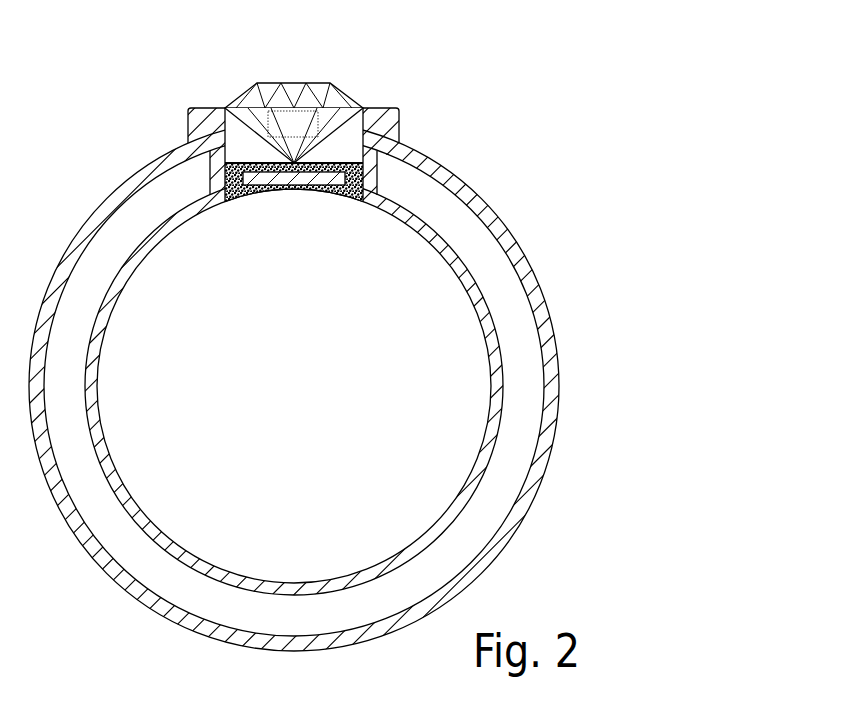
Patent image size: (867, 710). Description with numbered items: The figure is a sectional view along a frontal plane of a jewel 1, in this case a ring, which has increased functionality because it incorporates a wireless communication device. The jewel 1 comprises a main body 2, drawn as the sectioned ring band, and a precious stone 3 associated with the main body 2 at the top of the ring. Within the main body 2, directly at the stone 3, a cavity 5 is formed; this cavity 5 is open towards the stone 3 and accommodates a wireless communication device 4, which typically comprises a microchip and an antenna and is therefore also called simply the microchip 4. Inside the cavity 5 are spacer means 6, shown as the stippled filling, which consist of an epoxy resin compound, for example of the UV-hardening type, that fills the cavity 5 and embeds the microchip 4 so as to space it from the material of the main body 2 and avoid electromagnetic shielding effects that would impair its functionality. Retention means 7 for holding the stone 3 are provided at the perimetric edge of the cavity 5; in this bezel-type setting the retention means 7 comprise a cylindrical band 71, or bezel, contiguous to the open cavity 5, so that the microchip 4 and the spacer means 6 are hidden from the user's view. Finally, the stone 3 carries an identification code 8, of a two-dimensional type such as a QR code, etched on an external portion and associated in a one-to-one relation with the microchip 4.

The jewel 1 is at (632, 163).
The main body 2 is at (574, 392).
The precious stone 3 is at (230, 77).
The wireless communication device 4 is at (314, 198).
The cavity 5 is at (229, 151).
The spacer means 6 is at (234, 201).
The retention means 7 is at (375, 125).
The cylindrical band 71 is at (293, 151).
The identification code 8 is at (287, 116).